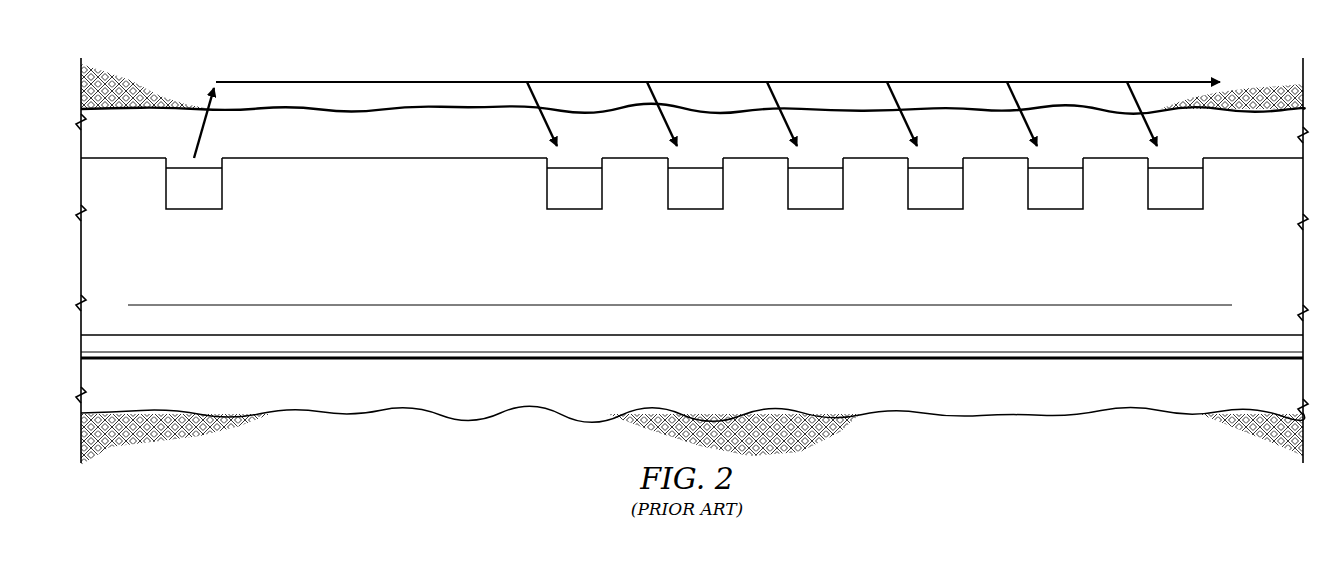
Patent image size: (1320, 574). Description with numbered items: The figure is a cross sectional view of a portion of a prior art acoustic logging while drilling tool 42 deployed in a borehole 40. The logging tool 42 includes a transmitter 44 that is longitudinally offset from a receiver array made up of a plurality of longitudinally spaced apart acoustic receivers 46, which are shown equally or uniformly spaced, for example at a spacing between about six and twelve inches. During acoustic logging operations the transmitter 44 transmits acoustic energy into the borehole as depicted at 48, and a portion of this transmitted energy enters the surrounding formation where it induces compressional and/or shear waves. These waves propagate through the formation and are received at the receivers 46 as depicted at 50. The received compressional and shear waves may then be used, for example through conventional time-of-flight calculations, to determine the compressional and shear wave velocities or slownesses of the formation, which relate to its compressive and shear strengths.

The borehole 40 is at (409, 412).
The acoustic logging while drilling tool 42 is at (737, 359).
The transmitter 44 is at (164, 192).
The acoustic receivers 46 is at (545, 193).
The transmitted acoustic energy 48 is at (197, 140).
The received compressional and shear waves 50 is at (543, 124).